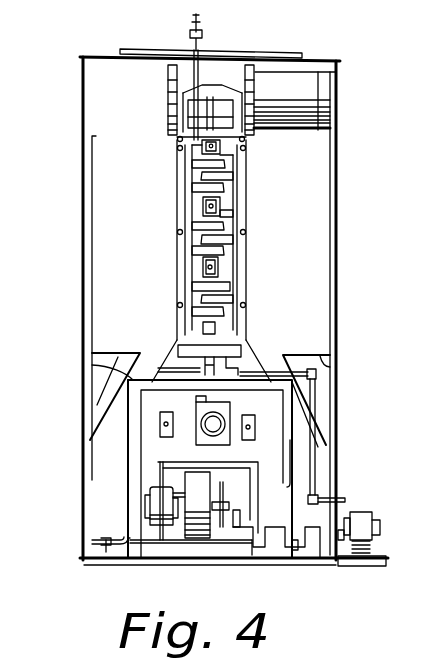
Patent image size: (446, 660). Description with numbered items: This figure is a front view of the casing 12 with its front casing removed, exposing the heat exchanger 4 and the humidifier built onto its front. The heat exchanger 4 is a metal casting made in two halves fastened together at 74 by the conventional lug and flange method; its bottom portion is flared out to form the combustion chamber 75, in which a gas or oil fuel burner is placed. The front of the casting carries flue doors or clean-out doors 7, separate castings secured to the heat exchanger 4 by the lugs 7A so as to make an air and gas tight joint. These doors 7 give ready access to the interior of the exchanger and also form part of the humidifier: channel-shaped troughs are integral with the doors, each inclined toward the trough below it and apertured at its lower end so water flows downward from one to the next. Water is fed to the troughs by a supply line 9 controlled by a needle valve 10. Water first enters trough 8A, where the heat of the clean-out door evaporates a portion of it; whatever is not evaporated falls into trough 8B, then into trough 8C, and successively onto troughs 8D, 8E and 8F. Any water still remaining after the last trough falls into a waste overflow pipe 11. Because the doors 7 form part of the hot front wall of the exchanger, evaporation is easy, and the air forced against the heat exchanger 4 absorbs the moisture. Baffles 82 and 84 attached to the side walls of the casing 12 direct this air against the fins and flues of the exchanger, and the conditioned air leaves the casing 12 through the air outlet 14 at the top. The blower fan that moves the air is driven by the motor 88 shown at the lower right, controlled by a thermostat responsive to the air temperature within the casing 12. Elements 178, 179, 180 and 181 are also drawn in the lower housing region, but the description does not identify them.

The heat exchanger 4 is at (188, 8).
The flue doors or clean-out doors 7 is at (208, 270).
The lugs 7A is at (207, 205).
The trough 8A is at (222, 155).
The trough 8B is at (195, 163).
The trough 8C is at (227, 176).
The trough 8D is at (195, 188).
The trough 8E is at (227, 214).
The trough 8F is at (195, 228).
The supply line 9 is at (203, 83).
The needle valve 10 is at (192, 27).
The waste overflow pipe 11 is at (286, 366).
The casing 12 is at (83, 303).
The air outlet 14 is at (260, 51).
The fastening of heat exchanger castings 74 is at (263, 437).
The combustion chamber 75 is at (125, 378).
The baffle 82 is at (172, 374).
The baffle 84 is at (316, 373).
The motor 88 is at (368, 517).
The motor 178 is at (148, 500).
The shaft 179 is at (224, 493).
The heater unit 180 is at (175, 473).
The pipework 181 is at (213, 547).